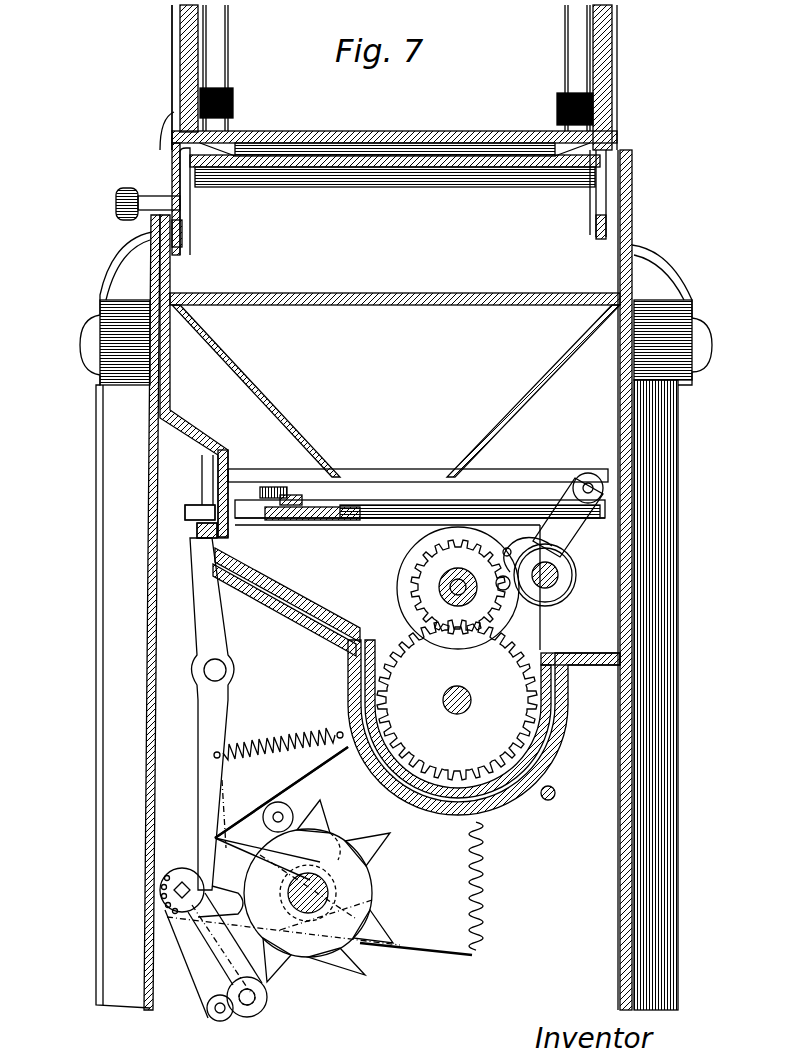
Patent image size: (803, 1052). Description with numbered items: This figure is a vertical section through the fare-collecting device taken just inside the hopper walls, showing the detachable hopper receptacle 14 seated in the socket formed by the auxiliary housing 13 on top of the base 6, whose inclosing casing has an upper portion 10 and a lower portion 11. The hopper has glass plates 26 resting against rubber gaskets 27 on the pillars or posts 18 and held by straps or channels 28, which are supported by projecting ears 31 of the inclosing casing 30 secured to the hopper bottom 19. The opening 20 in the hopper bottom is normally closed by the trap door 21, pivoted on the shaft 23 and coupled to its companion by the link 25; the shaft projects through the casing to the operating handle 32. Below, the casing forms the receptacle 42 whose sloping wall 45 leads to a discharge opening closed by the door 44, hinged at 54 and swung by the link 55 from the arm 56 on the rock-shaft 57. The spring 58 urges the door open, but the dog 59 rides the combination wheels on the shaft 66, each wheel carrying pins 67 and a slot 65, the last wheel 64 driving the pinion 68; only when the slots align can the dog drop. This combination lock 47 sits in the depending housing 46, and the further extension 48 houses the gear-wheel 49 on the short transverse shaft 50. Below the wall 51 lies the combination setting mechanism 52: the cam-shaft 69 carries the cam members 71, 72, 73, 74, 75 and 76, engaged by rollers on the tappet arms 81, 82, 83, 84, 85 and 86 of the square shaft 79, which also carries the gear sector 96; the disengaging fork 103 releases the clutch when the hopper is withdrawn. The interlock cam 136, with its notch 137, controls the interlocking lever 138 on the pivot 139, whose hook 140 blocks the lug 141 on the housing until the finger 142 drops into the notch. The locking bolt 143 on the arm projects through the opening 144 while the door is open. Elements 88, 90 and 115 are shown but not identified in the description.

The base 6 is at (82, 262).
The upper portion of inclosing casing 10 is at (660, 285).
The lower portion of inclosing casing 11 is at (680, 680).
The auxiliary housing 13 is at (150, 645).
The hopper receptacle 14 is at (172, 32).
The pillars or posts 18 is at (220, 48).
The hopper bottom 19 is at (372, 150).
The opening 20 is at (452, 157).
The trap door 21 is at (300, 152).
The pivot shaft 23 is at (190, 203).
The link or connecting rod 25 is at (183, 236).
The glass plates 26 is at (186, 77).
The rubber gaskets 27 is at (236, 97).
The straps or channels 28 is at (178, 104).
The inclosing casing 30 is at (634, 235).
The projecting ears 31 is at (166, 136).
The operating handle 32 is at (124, 205).
The receptacle 42 is at (395, 279).
The door 44 is at (350, 527).
The sloping wall 45 is at (396, 391).
The depending housing 46 is at (292, 605).
The combination lock 47 is at (358, 572).
The further extension 48 is at (552, 697).
The gear-wheel 49 is at (426, 695).
The short transverse shaft 50 is at (457, 714).
The wall 51 is at (567, 748).
The combination setting mechanism 52 is at (505, 932).
The hinge 54 is at (280, 499).
The link 55 is at (403, 498).
The arm 56 is at (585, 480).
The rock-shaft 57 is at (555, 585).
The spring 58 is at (590, 548).
The dog 59 is at (505, 572).
The combination wheel 64 is at (410, 573).
The slot 65 is at (430, 556).
The shaft 66 is at (442, 598).
The pins 67 is at (510, 592).
The pinion 68 is at (440, 586).
The cam-shaft 69 is at (325, 890).
The cam member 71 is at (281, 792).
The cam member 72 is at (392, 943).
The cam member 73 is at (283, 975).
The cam member 74 is at (382, 840).
The cam member 75 is at (360, 973).
The cam member 76 is at (310, 812).
The square shaft 79 is at (176, 890).
The tappet arm 81 is at (328, 877).
The tappet arm 82 is at (247, 1017).
The tappet arm 83 is at (331, 830).
The tappet arm 84 is at (217, 1020).
The tappet arm 85 is at (273, 805).
The tappet arm 86 is at (258, 1005).
The pawl 88 is at (165, 905).
The pins 90 is at (165, 878).
The gear sector 96 is at (484, 880).
The disengaging fork 103 is at (556, 793).
The slot 115 is at (232, 472).
The cam 136 is at (357, 921).
The depressed portion or notch 137 is at (335, 845).
The interlocking lever 138 is at (210, 717).
The pivot 139 is at (228, 670).
The hook or projection 140 is at (195, 512).
The projection or lug 141 is at (200, 530).
The finger 142 is at (220, 948).
The locking bolt 143 is at (362, 465).
The opening 144 is at (276, 465).